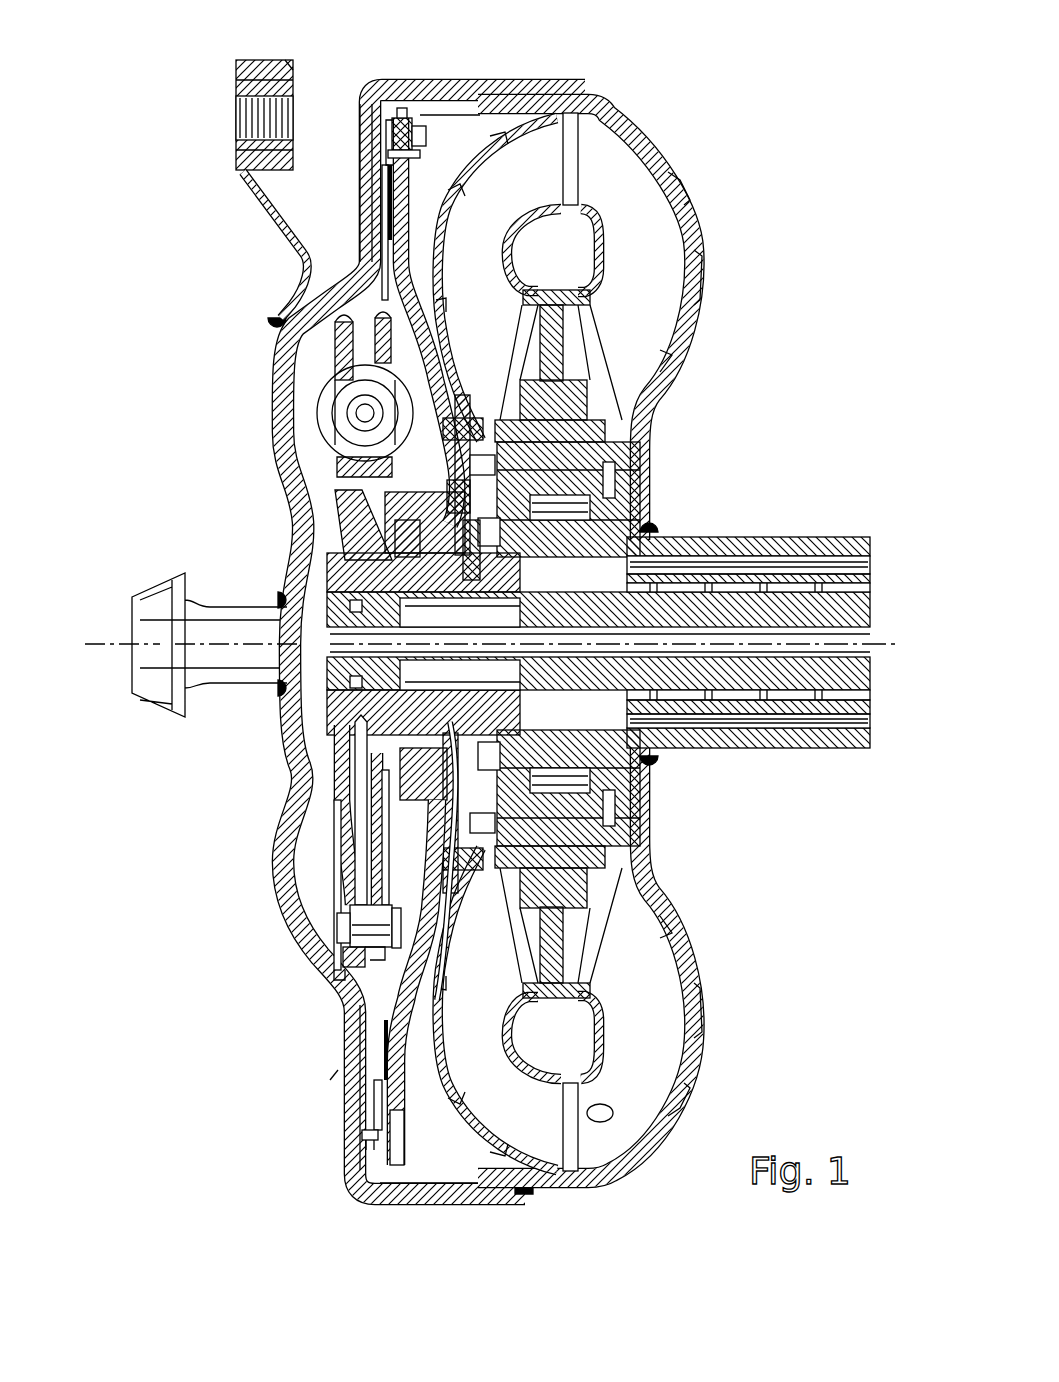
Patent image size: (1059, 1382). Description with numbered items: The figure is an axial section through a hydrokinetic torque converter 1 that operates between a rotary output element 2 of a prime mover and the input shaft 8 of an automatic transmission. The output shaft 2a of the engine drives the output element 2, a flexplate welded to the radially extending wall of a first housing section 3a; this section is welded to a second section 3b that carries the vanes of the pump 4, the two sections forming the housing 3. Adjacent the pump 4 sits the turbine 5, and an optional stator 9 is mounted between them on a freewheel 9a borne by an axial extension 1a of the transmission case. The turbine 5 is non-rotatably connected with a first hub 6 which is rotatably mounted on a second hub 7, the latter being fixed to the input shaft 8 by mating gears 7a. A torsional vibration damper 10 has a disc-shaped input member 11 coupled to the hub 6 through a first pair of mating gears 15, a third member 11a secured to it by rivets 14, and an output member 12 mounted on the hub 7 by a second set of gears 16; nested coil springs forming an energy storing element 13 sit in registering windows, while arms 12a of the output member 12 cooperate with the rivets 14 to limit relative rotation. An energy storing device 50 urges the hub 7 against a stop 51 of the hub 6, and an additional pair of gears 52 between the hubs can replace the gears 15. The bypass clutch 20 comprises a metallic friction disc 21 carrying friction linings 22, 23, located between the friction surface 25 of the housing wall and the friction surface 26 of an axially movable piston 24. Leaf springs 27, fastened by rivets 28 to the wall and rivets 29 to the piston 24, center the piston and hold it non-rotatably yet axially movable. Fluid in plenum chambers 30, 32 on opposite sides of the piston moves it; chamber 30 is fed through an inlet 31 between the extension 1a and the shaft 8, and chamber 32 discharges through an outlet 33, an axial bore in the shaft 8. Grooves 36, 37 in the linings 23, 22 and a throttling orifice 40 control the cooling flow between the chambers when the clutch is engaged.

The hydrokinetic torque converter 1 is at (728, 97).
The axial extension of the transmission case 1a is at (733, 573).
The rotary output element 2 is at (371, 232).
The output shaft 2a is at (160, 597).
The housing 3 is at (276, 398).
The first housing section 3a is at (286, 432).
The second housing section 3b is at (690, 252).
The pump 4 is at (625, 178).
The turbine 5 is at (540, 150).
The first hub 6 is at (568, 460).
The second hub 7 is at (337, 708).
The set of mating gears 7a is at (440, 676).
The input shaft 8 is at (733, 675).
The stator 9 is at (553, 340).
The freewheel 9a is at (622, 490).
The torsional vibration damper 10 is at (321, 459).
The input member 11 is at (387, 860).
The third disc-shaped member 11a is at (337, 824).
The output member 12 is at (353, 890).
The radially outwardly extending arm 12a is at (357, 953).
The resilient energy storing element 13 is at (412, 382).
The rivets 14 is at (365, 920).
The first pair of mating gears 15 is at (366, 768).
The second set of mating gears 16 is at (327, 735).
The bypass clutch 20 is at (352, 192).
The friction disc 21 is at (377, 998).
The friction lining 22 is at (376, 182).
The friction lining 23 is at (395, 240).
The piston 24 is at (413, 272).
The friction surface 25 is at (375, 256).
The friction surface 26 is at (402, 222).
The leaf springs 27 is at (402, 135).
The rivets 28 is at (378, 1140).
The rivets 29 is at (384, 128).
The plenum chamber 30 is at (452, 112).
The inlet 31 is at (840, 585).
The plenum chamber 32 is at (325, 344).
The outlet 33 is at (775, 635).
The grooves 36 is at (387, 1048).
The grooves 37 is at (390, 1090).
The throttling orifice 40 is at (383, 1077).
The energy storing device 50 is at (573, 498).
The stop 51 is at (440, 540).
The additional pair of mating gears 52 is at (440, 524).